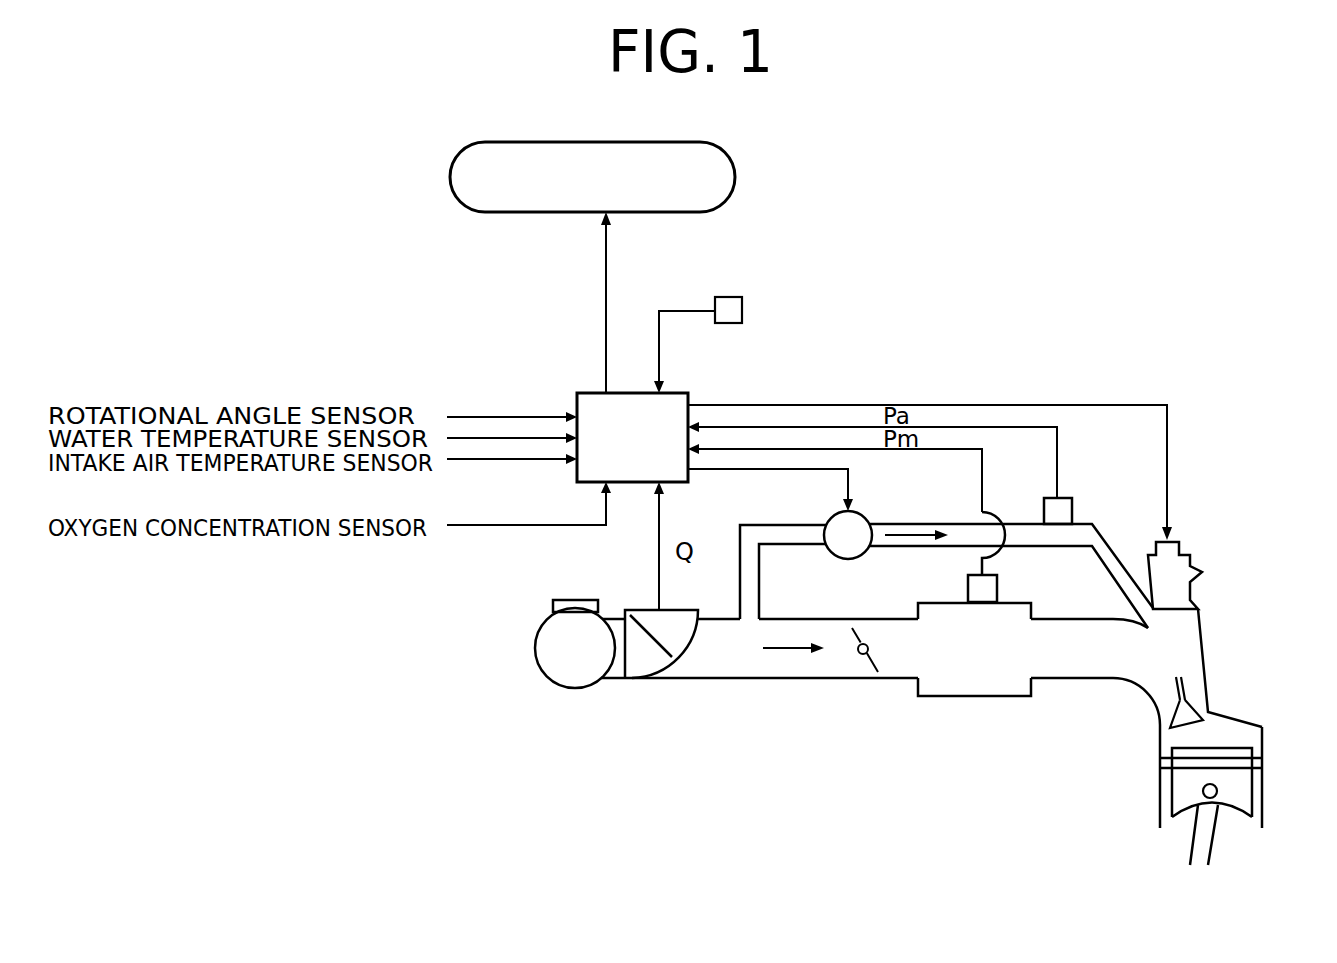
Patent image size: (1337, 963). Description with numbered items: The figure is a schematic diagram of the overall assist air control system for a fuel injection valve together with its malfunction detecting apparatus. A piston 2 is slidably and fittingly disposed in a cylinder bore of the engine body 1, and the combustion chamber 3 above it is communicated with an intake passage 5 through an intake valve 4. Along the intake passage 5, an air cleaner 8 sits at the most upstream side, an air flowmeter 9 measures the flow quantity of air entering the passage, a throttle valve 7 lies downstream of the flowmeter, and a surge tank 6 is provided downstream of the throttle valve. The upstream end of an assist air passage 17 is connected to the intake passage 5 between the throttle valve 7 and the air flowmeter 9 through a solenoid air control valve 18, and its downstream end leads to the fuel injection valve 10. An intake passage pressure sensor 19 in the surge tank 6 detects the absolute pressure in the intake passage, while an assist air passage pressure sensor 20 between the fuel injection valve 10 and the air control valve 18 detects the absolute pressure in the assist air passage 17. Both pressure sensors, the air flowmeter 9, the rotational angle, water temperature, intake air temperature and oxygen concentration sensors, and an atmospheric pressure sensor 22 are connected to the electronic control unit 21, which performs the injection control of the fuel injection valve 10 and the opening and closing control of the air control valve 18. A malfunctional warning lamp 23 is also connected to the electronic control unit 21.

The engine body 1 is at (1263, 738).
The piston 2 is at (1255, 792).
The combustion chamber 3 is at (1237, 727).
The intake valve 4 is at (1187, 690).
The intake passage 5 is at (1070, 670).
The surge tank 6 is at (983, 685).
The throttle valve 7 is at (868, 667).
The air cleaner 8 is at (575, 678).
The air flowmeter 9 is at (653, 663).
The fuel injection valve 10 is at (1195, 562).
The assist air passage 17 is at (1100, 536).
The air control valve 18 is at (868, 518).
The intake passage pressure sensor 19 is at (997, 585).
The assist air passage pressure sensor 20 is at (1057, 498).
The electronic control unit 21 is at (688, 393).
The atmospheric pressure sensor 22 is at (726, 297).
The malfunctional warning lamp 23 is at (735, 170).